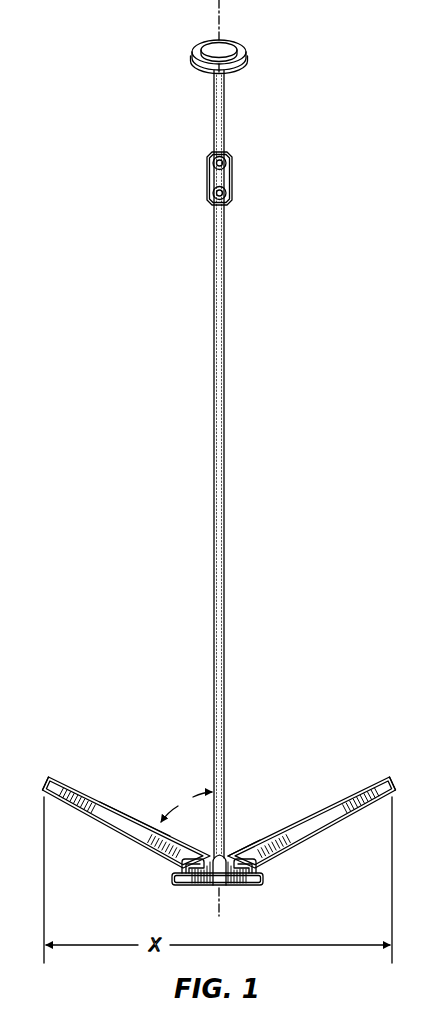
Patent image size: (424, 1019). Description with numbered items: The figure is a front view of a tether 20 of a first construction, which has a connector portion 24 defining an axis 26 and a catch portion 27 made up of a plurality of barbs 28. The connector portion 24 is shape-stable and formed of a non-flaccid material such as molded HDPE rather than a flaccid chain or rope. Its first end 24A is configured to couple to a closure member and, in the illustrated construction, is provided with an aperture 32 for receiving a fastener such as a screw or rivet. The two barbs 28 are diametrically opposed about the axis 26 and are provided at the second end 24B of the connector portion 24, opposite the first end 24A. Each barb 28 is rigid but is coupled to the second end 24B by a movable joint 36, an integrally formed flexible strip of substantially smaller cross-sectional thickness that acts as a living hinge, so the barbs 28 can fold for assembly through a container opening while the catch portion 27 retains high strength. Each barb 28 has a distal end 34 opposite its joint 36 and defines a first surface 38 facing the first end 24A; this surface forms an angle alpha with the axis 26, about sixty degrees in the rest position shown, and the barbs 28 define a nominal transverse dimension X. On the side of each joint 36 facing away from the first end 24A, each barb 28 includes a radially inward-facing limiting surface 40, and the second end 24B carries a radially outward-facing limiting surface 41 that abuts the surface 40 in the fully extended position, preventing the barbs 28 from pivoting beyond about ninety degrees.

The tether 20 is at (113, 421).
The connector portion 24 is at (243, 442).
The first end of the connector portion 24A is at (243, 68).
The second end of the connector portion 24B is at (207, 893).
The axis 26 is at (216, 19).
The catch portion 27 is at (100, 749).
The barbs 28 is at (112, 817).
The aperture 32 is at (202, 76).
The distal end 34 is at (46, 779).
The movable joint 36 is at (236, 851).
The first surface 38 is at (148, 817).
The limiting surface 40 is at (178, 869).
The limiting surface 41 is at (178, 889).